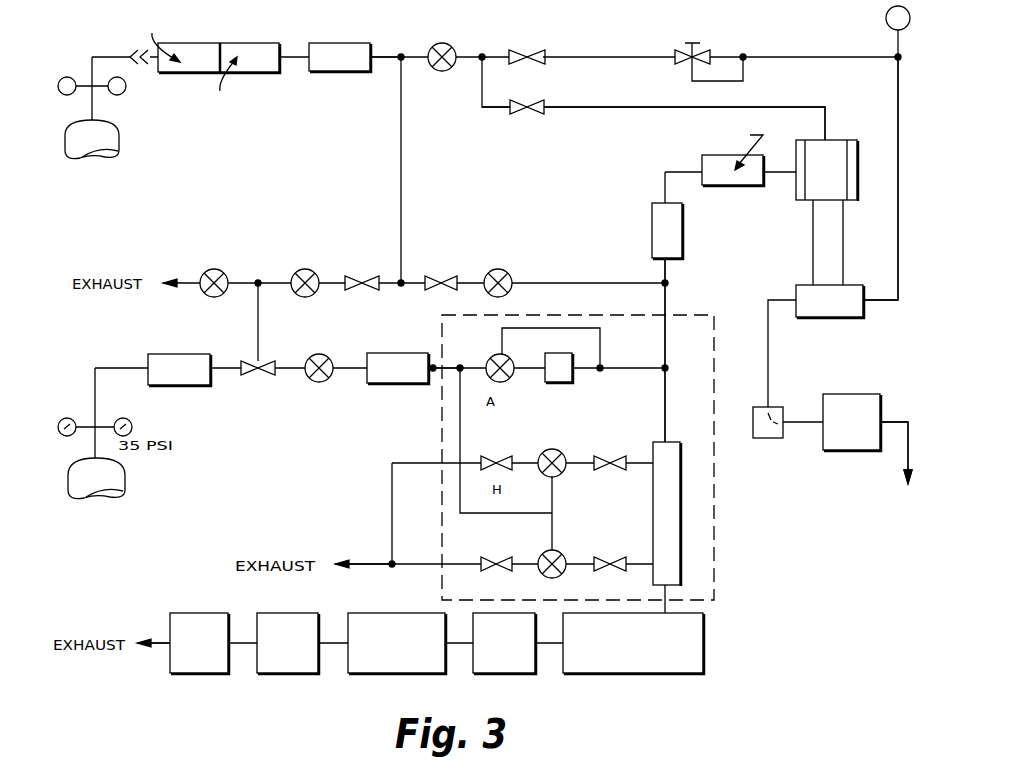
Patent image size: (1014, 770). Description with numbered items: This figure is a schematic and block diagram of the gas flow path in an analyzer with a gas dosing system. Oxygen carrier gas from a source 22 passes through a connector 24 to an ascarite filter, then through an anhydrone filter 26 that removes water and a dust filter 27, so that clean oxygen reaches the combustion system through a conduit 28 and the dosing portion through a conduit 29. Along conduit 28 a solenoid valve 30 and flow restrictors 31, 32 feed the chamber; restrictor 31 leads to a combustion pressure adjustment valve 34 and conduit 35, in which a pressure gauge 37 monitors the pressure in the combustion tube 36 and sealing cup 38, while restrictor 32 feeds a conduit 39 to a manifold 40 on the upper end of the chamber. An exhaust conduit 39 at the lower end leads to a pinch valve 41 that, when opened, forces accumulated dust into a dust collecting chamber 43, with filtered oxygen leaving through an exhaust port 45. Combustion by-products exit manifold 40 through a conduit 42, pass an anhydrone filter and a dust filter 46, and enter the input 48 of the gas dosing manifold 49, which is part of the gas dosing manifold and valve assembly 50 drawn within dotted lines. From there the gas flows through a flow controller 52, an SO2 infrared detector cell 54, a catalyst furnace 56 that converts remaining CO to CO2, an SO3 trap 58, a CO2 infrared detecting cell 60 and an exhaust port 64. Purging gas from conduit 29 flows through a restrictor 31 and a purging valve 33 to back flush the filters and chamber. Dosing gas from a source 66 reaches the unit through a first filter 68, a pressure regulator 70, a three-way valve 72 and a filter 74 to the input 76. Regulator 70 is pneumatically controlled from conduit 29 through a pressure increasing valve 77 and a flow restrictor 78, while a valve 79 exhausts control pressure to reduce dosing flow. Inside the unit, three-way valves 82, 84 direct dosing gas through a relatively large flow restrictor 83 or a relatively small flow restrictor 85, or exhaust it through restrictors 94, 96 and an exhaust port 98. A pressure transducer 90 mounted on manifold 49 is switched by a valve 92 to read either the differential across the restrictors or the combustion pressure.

The source 22 is at (119, 131).
The connector 24 is at (131, 51).
The anhydrone filter 26 is at (251, 48).
The dust filter 27 is at (348, 43).
The conduit 28 is at (412, 55).
The conduit 29 is at (403, 165).
The valve 30 is at (448, 44).
The flow restrictor 31 is at (532, 50).
The flow restrictor 32 is at (526, 115).
The purging valve 33 is at (511, 270).
The combustion pressure adjustment valve 34 is at (697, 48).
The conduit 35 is at (898, 90).
The combustion tube 36 is at (843, 245).
The pressure gauge 37 is at (886, 16).
The sealing cup 38 is at (842, 319).
The exhaust conduit 39 is at (643, 107).
The manifold 40 is at (856, 139).
The pinch valve 41 is at (757, 439).
The conduit 42 is at (779, 173).
The dust collecting chamber 43 is at (872, 394).
The exhaust port 45 is at (902, 478).
The dust filter 46 is at (652, 228).
The input 48 is at (669, 298).
The gas dosing manifold 49 is at (675, 443).
The gas dosing manifold and valve assembly 50 is at (714, 568).
The flow controller 52 is at (617, 676).
The SO2 infrared detector cell 54 is at (486, 676).
The catalyst furnace 56 is at (361, 676).
The SO3 trap 58 is at (272, 676).
The CO2 infrared detecting cell 60 is at (185, 676).
The exhaust port 64 is at (159, 641).
The source 66 is at (125, 472).
The first filter 68 is at (188, 354).
The pressure regulator 70 is at (258, 377).
The 3-way valve 72 is at (317, 382).
The filter 74 is at (400, 352).
The input 76 is at (437, 364).
The pressure increasing valve 77 is at (307, 270).
The flow restrictor 78 is at (368, 277).
The valve 79 is at (215, 270).
The valve 82 is at (555, 450).
The first relatively large flow restrictor 83 is at (614, 456).
The valve 84 is at (543, 574).
The second relatively small flow restrictor 85 is at (604, 572).
The pressure transducer 90 is at (559, 384).
The valve 92 is at (511, 358).
The flow restrictor 94 is at (502, 457).
The flow restrictor 96 is at (488, 572).
The exhaust port 98 is at (365, 564).